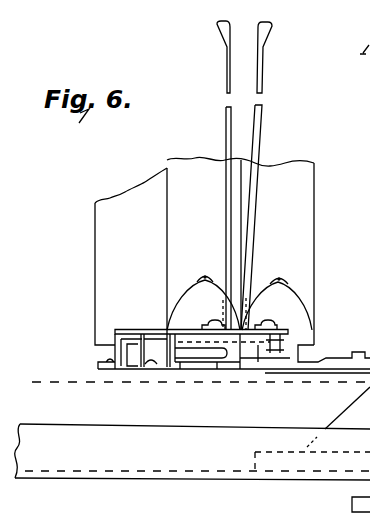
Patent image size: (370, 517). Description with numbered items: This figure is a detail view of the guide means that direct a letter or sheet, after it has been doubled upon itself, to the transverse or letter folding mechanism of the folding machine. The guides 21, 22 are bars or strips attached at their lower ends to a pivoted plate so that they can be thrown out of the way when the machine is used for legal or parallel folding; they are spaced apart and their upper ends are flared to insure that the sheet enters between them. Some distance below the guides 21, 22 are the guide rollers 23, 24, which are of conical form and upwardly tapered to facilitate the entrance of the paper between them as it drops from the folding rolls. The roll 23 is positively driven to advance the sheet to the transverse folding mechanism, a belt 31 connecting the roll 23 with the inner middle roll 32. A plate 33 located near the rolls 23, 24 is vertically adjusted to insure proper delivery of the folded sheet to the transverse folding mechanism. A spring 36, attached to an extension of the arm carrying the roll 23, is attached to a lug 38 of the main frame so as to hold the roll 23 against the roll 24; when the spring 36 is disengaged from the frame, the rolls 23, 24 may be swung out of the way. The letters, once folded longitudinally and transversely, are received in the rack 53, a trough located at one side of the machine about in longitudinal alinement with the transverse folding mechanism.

The guide 21 is at (224, 65).
The guide 22 is at (268, 176).
The guide roller 23 is at (183, 293).
The guide roller 24 is at (300, 313).
The belt 31 is at (205, 352).
The inner middle roll 32 is at (182, 163).
The plate 33 is at (153, 322).
The spring 36 is at (283, 342).
The lug 38 is at (280, 342).
The rack 53 is at (247, 427).